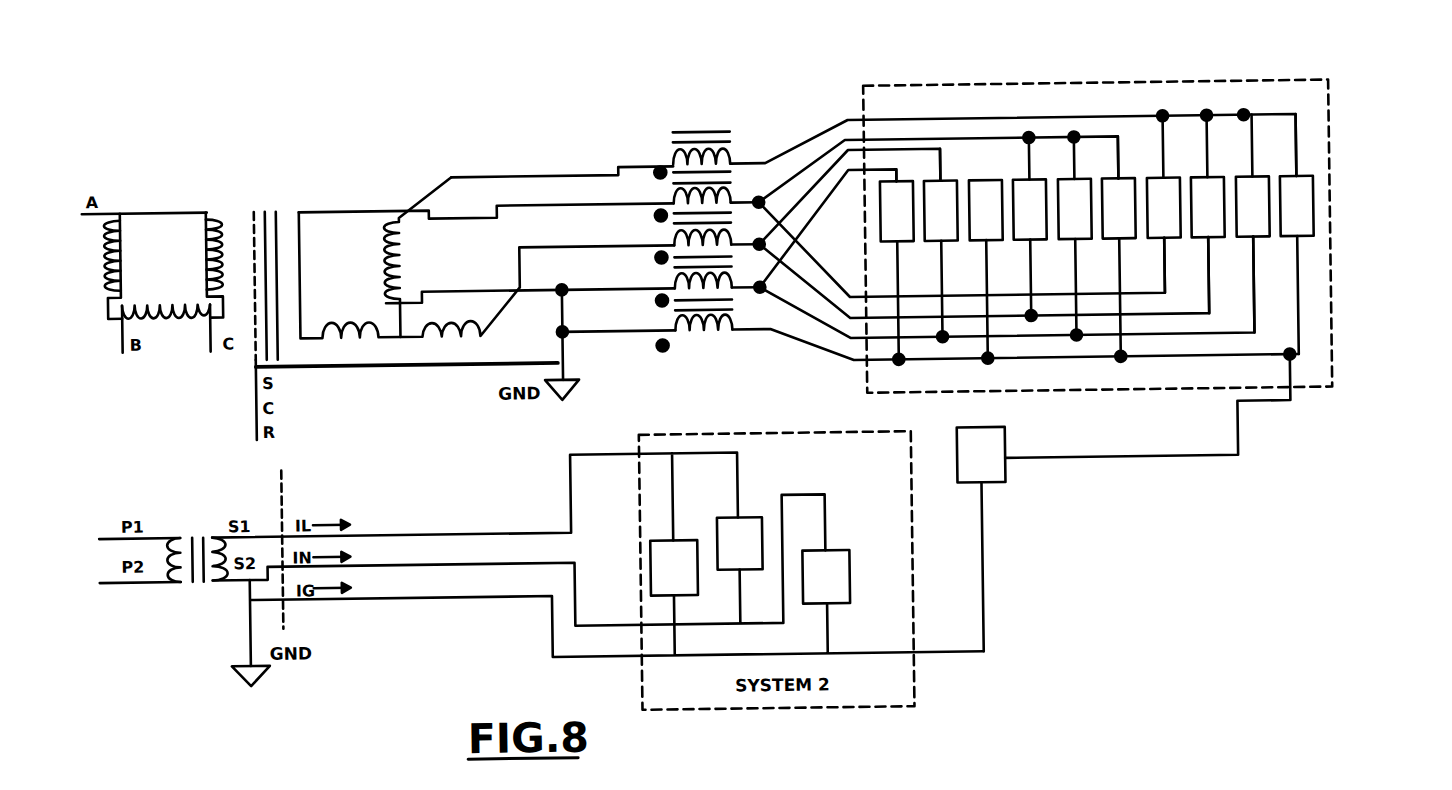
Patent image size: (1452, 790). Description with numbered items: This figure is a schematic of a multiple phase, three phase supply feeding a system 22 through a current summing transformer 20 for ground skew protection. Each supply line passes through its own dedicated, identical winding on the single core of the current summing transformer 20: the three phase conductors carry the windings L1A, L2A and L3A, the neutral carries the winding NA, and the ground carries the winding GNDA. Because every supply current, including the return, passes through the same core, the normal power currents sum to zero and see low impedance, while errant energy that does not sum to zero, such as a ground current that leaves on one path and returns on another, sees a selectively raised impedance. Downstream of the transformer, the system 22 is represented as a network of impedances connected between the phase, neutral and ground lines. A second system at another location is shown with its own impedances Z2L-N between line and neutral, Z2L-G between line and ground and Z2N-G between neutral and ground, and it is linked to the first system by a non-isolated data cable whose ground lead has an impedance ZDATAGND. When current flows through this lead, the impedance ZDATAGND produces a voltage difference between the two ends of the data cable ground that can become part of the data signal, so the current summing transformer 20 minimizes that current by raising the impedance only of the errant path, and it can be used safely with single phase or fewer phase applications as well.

The current summing transformer 20 is at (690, 221).
The system 22 is at (1240, 58).
The line 1 coil L1A is at (679, 156).
The line 2 coil L2A is at (680, 204).
The line 3 coil L3A is at (681, 245).
The neutral coil NA is at (683, 289).
The ground coil GNDA is at (674, 333).
The data cable ground lead impedance ZDATAGND is at (1039, 453).
The system 2 line-ground impedance Z2L-G is at (639, 568).
The system 2 line-neutral impedance Z2L-N is at (773, 509).
The system 2 neutral-ground impedance Z2N-G is at (852, 597).